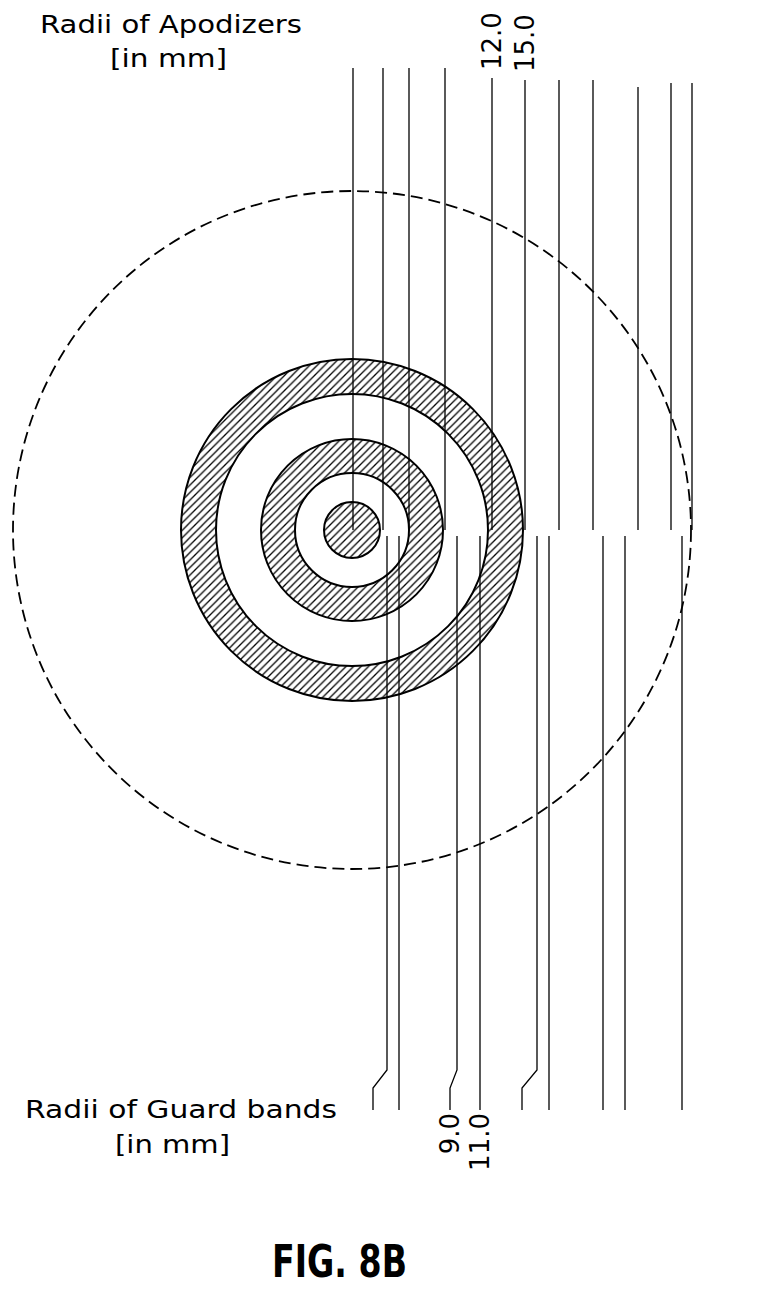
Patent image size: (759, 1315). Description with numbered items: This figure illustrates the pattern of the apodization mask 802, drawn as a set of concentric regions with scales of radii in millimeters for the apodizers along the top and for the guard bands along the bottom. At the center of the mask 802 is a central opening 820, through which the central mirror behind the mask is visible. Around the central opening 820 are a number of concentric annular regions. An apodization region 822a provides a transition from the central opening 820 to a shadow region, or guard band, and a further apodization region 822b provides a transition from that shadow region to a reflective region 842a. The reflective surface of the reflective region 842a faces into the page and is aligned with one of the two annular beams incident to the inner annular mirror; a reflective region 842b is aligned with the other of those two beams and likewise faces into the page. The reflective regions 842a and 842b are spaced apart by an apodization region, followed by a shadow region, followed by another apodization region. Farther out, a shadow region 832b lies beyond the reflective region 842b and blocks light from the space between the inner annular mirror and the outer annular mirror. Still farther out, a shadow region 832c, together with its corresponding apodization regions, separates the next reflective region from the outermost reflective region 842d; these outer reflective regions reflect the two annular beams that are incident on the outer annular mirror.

The mask 802 is at (75, 777).
The central opening 820 is at (349, 512).
The apodization region 822a is at (340, 503).
The apodization region 822b is at (320, 493).
The shadow region 832b is at (332, 500).
The shadow region 832c is at (292, 783).
The reflective region 842a is at (340, 745).
The reflective region 842b is at (293, 463).
The reflective region 842d is at (261, 818).